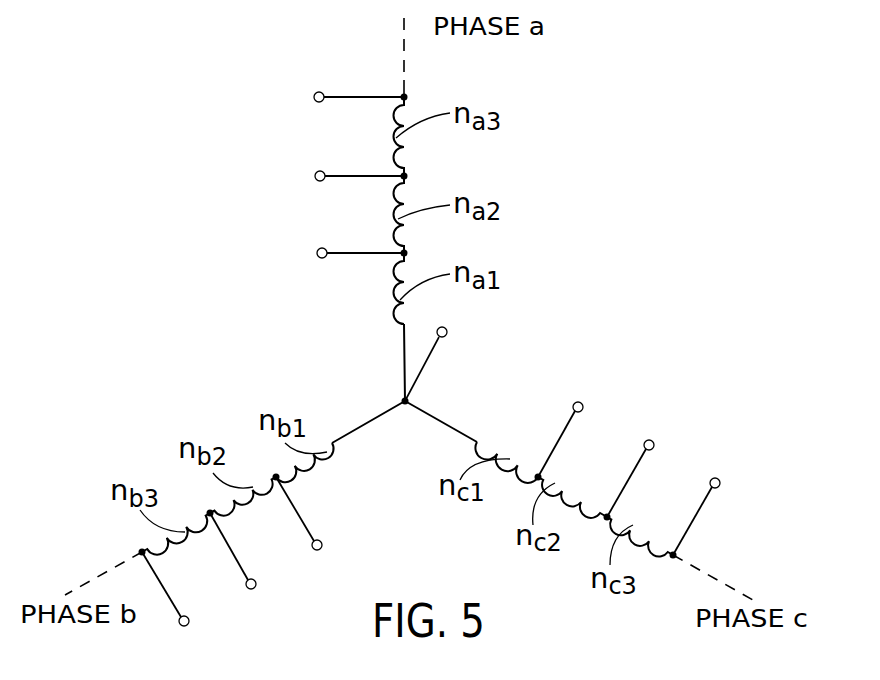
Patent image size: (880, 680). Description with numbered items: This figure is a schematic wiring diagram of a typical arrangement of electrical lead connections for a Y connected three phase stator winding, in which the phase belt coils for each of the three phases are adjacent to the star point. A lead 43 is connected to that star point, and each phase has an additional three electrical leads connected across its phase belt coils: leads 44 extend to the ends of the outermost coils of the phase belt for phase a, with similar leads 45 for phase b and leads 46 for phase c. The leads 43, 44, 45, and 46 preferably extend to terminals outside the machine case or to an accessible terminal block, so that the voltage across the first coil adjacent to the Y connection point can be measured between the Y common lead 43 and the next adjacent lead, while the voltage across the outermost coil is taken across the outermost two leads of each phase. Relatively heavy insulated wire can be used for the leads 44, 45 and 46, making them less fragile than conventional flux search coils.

The lead 43 is at (426, 364).
The leads 44 is at (335, 99).
The leads 45 is at (307, 533).
The leads 46 is at (703, 493).